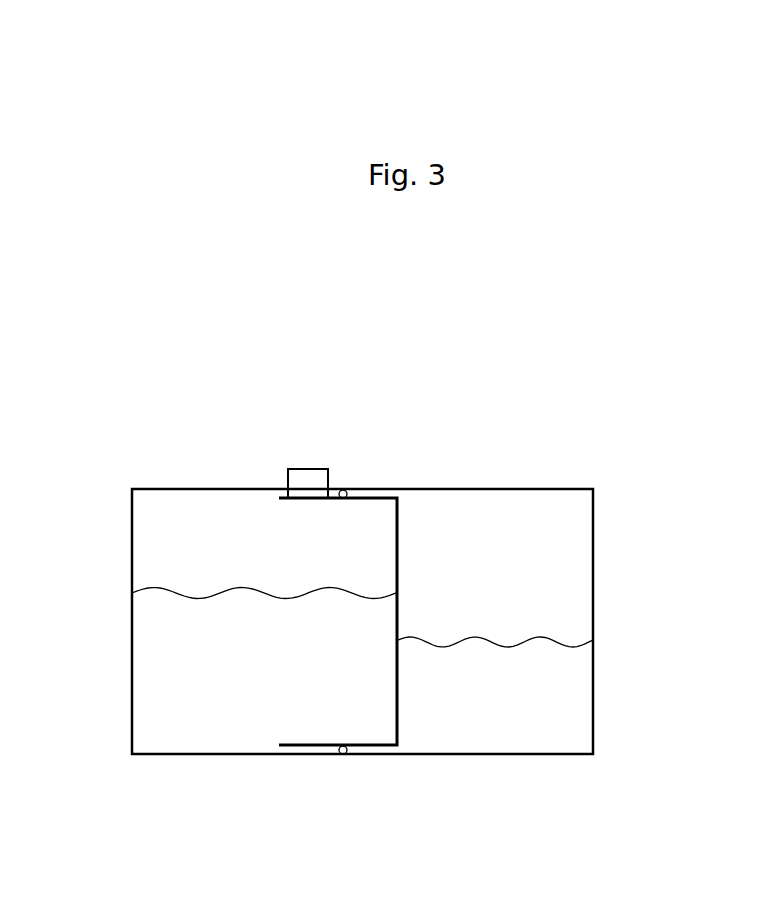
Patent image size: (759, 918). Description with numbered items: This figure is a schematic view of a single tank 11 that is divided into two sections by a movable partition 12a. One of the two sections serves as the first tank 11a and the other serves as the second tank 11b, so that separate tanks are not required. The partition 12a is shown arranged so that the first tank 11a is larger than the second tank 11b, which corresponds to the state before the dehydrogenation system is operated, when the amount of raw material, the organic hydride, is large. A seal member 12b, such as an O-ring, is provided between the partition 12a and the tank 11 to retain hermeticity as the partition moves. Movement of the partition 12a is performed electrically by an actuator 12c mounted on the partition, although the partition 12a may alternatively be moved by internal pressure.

The tank 11 is at (600, 386).
The first tank 11a is at (152, 554).
The second tank 11b is at (563, 556).
The partition 12a is at (397, 548).
The seal member 12b is at (346, 487).
The actuator 12c is at (298, 468).